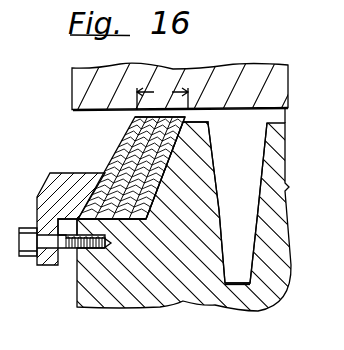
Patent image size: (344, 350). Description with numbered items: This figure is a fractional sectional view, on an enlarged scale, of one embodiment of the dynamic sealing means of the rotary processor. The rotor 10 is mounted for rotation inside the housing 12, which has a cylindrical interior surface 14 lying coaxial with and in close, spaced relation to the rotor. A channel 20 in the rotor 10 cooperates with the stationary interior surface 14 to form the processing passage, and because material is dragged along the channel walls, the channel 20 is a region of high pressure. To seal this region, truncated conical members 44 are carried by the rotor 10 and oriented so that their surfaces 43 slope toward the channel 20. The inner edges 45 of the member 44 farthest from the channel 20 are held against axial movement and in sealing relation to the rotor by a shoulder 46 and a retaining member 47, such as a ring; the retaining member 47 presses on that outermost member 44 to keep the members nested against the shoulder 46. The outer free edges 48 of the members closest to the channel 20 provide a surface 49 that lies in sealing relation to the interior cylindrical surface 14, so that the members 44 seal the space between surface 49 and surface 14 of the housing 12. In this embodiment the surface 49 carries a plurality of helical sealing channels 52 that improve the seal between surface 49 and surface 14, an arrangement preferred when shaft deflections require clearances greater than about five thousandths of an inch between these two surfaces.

The rotor 10 is at (188, 303).
The housing 12 is at (189, 73).
The cylindrical interior surface 14 is at (234, 109).
The channel 20 is at (237, 204).
The surface 43 is at (208, 121).
The truncated conical member 44 is at (116, 150).
The inner edge 45 is at (114, 221).
The shoulder 46 is at (160, 198).
The retaining member 47 is at (50, 178).
The outer free edge 48 is at (138, 118).
The surface 49 is at (173, 112).
The helical sealing channel 52 is at (191, 108).